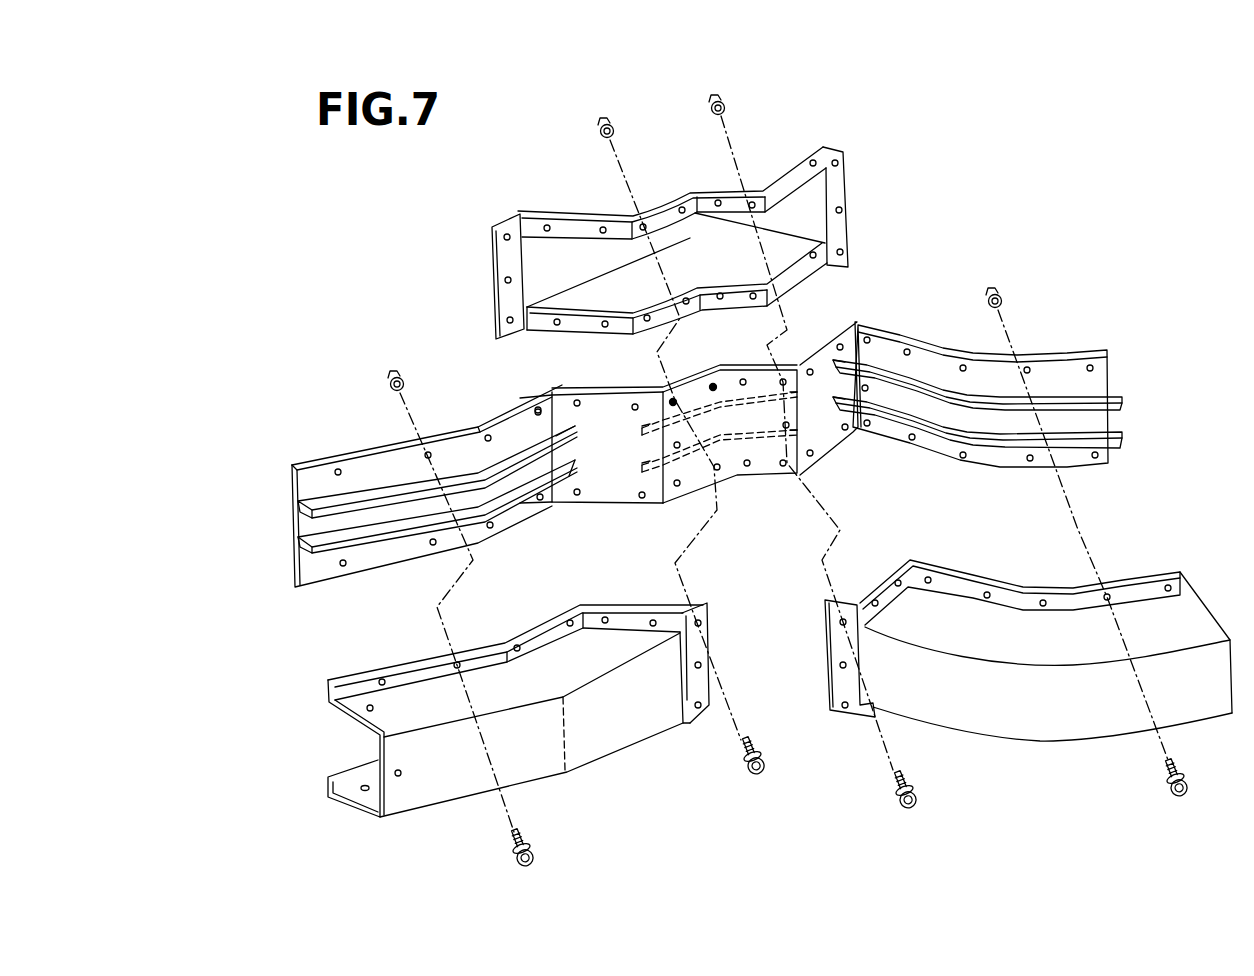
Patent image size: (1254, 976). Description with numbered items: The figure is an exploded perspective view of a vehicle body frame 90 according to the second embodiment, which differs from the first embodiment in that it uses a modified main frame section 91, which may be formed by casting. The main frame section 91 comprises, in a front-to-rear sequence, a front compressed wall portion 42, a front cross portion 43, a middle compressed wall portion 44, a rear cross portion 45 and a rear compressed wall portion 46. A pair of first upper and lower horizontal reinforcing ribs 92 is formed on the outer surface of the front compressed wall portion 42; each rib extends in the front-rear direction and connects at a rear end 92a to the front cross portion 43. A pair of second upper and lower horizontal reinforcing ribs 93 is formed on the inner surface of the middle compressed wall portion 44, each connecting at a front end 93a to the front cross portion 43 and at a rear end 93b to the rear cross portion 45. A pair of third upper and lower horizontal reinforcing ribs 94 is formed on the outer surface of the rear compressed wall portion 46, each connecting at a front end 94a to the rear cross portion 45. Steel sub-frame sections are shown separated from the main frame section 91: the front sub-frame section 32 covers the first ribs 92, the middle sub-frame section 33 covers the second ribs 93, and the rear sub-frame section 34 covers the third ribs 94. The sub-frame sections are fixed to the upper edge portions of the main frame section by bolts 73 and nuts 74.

The front sub-frame section 32 is at (597, 770).
The middle sub-frame section 33 is at (660, 167).
The rear sub-frame section 34 is at (1080, 740).
The front compressed wall portion 42 is at (377, 440).
The front cross portion 43 is at (593, 490).
The middle compressed wall portion 44 is at (710, 363).
The rear cross portion 45 is at (838, 414).
The rear compressed wall portion 46 is at (1047, 353).
The bolt 73 is at (532, 866).
The nut 74 is at (603, 122).
The vehicle body frame 90 is at (337, 275).
The main frame section 91 is at (283, 521).
The first upper and lower horizontal reinforcing ribs 92 is at (398, 486).
The rear end 92a is at (568, 462).
The second upper and lower horizontal reinforcing ribs 93 is at (750, 400).
The front end 93a is at (647, 432).
The rear end 93b is at (810, 397).
The third upper and lower horizontal reinforcing ribs 94 is at (992, 397).
The front end 94a is at (853, 403).